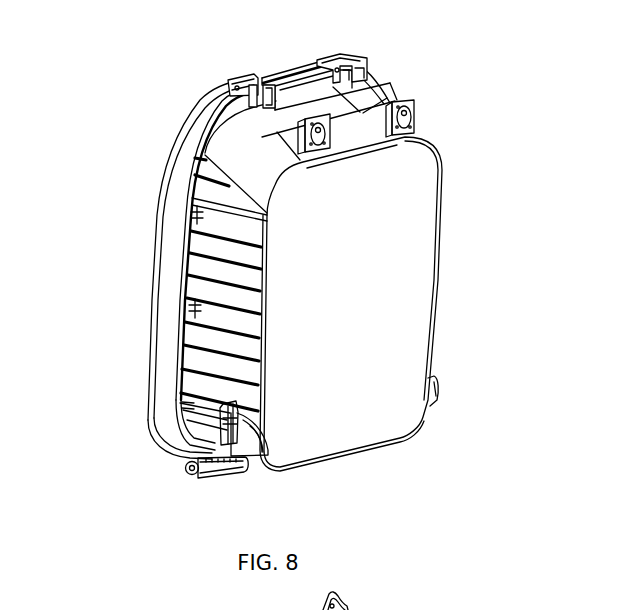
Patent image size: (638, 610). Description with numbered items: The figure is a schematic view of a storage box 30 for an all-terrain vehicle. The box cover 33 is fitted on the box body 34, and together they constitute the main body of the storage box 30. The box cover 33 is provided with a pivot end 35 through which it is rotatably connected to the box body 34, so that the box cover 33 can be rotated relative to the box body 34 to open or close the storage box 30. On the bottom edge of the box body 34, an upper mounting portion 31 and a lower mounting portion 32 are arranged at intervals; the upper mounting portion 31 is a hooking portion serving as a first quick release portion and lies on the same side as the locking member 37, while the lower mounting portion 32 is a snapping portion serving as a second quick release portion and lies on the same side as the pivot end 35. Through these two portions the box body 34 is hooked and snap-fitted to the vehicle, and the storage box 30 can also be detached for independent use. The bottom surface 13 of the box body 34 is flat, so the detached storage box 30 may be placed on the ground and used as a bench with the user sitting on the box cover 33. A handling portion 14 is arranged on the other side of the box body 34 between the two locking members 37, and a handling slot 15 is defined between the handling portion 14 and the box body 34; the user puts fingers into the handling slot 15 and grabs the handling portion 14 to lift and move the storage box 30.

The storage box 30 is at (334, 22).
The bottom surface 13 is at (400, 253).
The handling portion 14 is at (328, 73).
The handling slot 15 is at (265, 78).
The locking member 37 is at (342, 68).
The upper mounting portion 31 is at (417, 113).
The box cover 33 is at (170, 248).
The box body 34 is at (217, 333).
The lower mounting portion 32 is at (207, 425).
The pivot end 35 is at (212, 473).